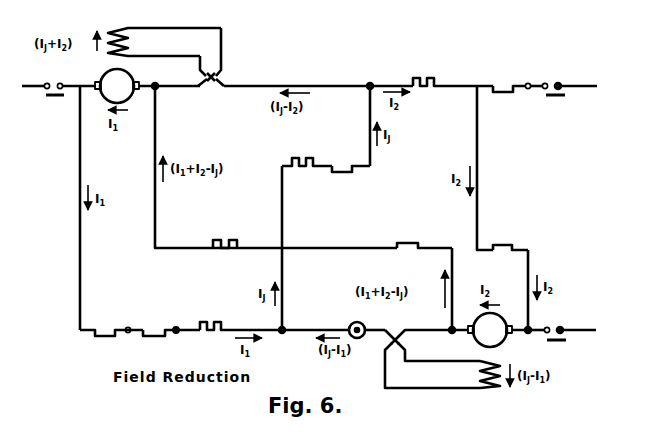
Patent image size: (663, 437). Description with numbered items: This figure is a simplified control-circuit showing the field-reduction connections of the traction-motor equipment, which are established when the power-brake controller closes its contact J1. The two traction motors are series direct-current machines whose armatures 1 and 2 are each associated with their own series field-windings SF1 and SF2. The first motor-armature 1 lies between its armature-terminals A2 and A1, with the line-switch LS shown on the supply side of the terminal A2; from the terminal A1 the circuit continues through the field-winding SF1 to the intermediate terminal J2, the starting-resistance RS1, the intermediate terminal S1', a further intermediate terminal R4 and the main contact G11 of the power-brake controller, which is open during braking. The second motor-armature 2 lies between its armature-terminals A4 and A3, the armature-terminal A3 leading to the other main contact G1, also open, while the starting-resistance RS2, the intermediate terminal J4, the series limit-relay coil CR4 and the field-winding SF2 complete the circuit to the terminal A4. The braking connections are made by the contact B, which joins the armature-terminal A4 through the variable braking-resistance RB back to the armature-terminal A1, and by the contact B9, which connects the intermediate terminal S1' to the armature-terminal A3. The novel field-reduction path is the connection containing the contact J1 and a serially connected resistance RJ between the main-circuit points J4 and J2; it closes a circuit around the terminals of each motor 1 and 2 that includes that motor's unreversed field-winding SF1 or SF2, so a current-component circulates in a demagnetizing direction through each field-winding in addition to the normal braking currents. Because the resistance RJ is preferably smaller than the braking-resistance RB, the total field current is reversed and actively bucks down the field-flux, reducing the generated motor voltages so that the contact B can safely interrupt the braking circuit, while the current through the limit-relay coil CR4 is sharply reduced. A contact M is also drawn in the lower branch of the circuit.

The line-switch LS is at (59, 81).
The armature-terminal A2 is at (74, 204).
The motor-armature 1 is at (117, 86).
The armature-terminal A1 is at (266, 162).
The series field-winding SF1 is at (165, 48).
The intermediate terminal J2 is at (368, 117).
The starting-resistance RS1 is at (452, 73).
The intermediate terminal S1' is at (481, 159).
The intermediate terminal R4 is at (334, 199).
The main contact of the power-brake controller G11 is at (561, 88).
The resistance RJ is at (307, 153).
The contact of the power-brake controller J1 is at (350, 160).
The intermediate terminal J4 is at (283, 258).
The variable braking-resistance RB is at (225, 235).
The braking-circuit contact B is at (423, 247).
The armature-terminal A4 is at (447, 290).
The braking-circuit contact B9 is at (508, 247).
The armature-terminal A3 is at (528, 300).
The motoring contact M is at (111, 324).
The starting-resistance RS2 is at (261, 317).
The series limit-relay coil CR4 is at (365, 321).
The series field-winding SF2 is at (444, 368).
The motor-armature 2 is at (490, 330).
The main contact of the power-brake controller G1 is at (562, 335).